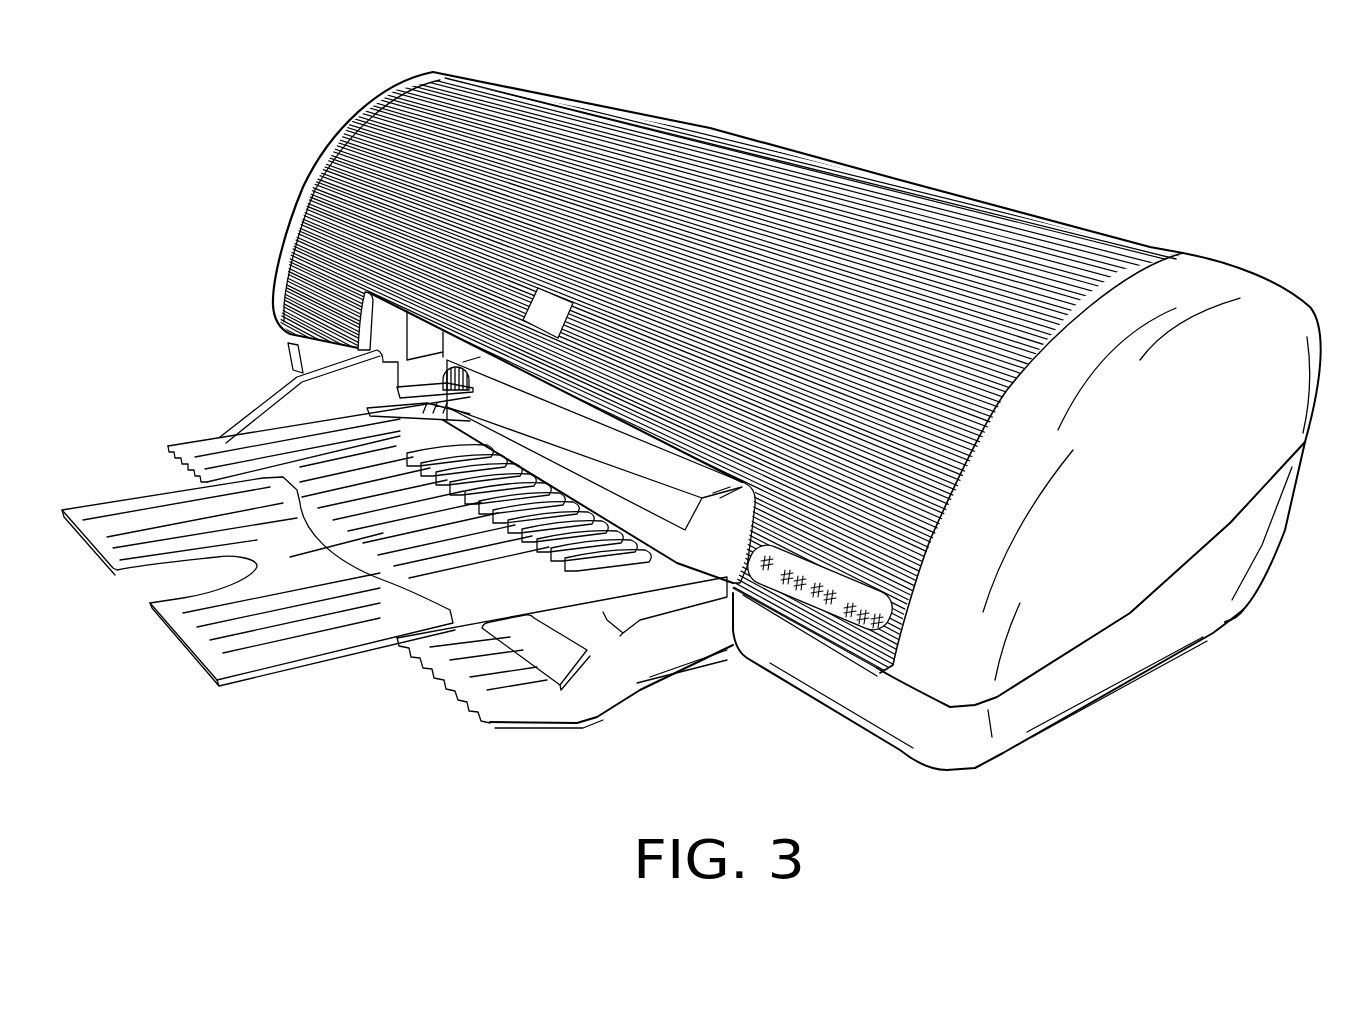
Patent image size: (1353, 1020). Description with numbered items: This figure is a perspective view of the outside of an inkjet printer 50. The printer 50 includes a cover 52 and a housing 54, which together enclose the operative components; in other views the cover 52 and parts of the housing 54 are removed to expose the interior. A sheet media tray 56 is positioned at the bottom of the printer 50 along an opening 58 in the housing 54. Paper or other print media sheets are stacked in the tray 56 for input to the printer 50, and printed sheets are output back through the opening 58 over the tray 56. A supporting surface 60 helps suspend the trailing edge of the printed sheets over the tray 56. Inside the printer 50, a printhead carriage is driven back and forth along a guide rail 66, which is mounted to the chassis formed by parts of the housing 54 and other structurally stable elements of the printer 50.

The inkjet printer 50 is at (1102, 84).
The cover 52 is at (390, 110).
The housing 54 is at (1263, 284).
The sheet media tray 56 is at (203, 450).
The opening 58 is at (360, 411).
The supporting surface 60 is at (736, 529).
The guide rail 66 is at (395, 406).